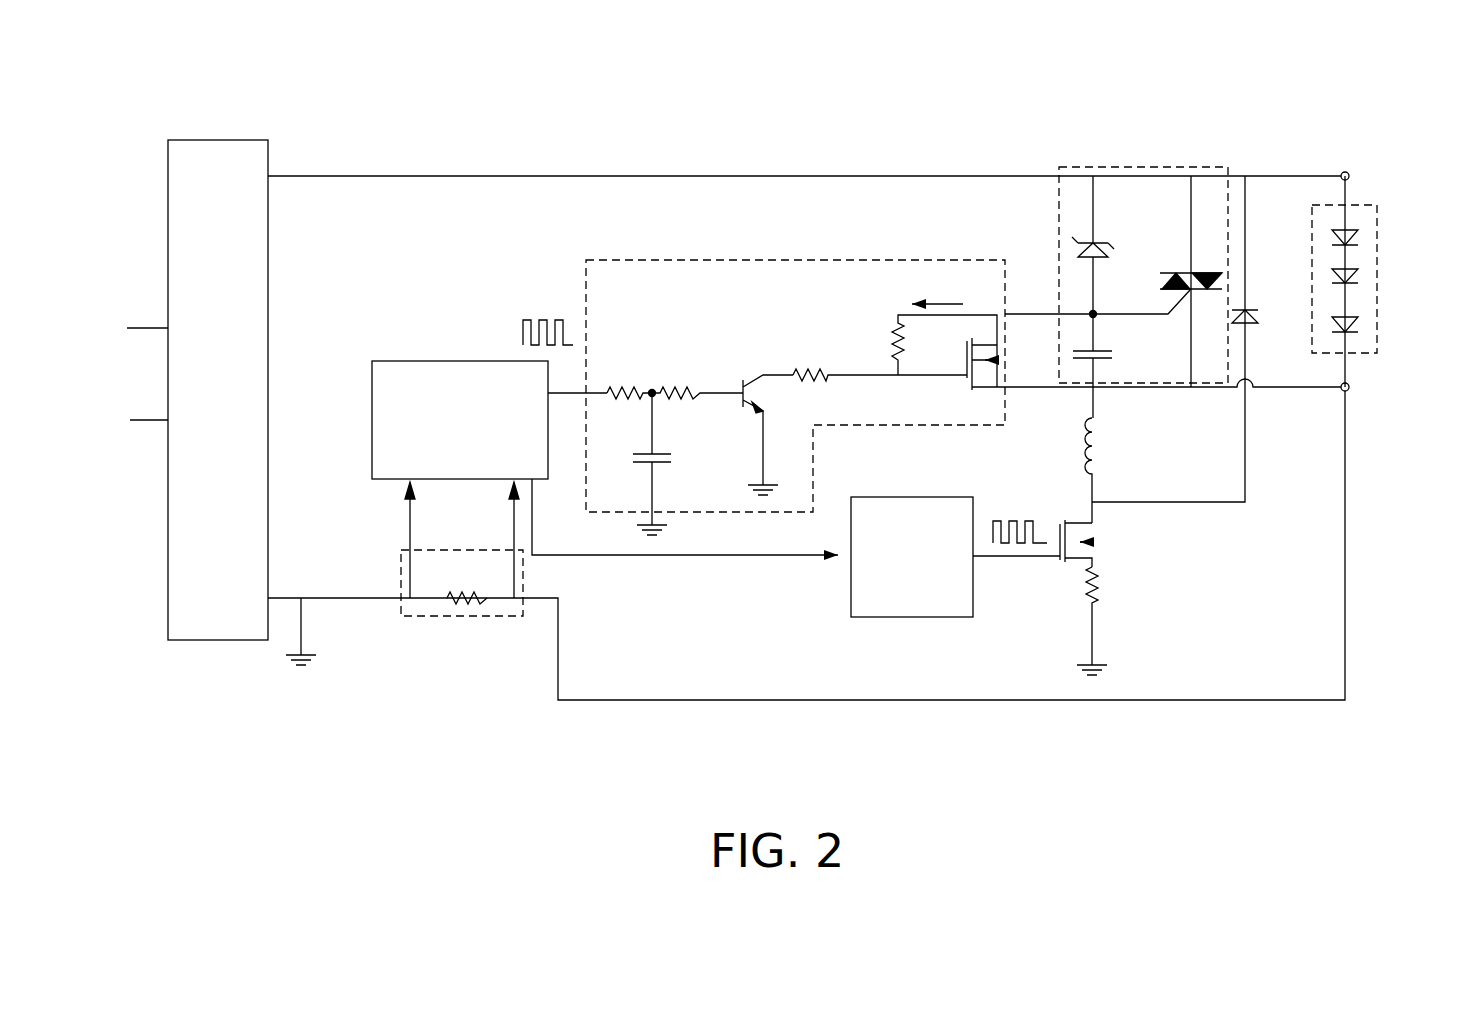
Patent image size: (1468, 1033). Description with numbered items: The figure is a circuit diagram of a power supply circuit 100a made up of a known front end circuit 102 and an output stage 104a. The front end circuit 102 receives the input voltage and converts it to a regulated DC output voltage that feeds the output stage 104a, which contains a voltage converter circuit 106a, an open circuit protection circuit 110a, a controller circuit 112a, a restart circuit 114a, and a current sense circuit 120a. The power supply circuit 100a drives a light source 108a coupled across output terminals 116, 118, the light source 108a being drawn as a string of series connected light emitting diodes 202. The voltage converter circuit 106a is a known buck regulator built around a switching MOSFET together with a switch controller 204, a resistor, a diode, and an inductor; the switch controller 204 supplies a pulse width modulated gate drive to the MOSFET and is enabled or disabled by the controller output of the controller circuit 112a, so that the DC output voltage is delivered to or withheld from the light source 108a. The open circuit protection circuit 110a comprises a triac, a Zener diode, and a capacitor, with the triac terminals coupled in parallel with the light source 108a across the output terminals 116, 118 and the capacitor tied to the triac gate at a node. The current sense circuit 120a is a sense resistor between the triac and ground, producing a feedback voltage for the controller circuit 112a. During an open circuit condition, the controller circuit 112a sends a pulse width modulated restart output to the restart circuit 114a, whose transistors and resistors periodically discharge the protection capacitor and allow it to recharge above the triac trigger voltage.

The power supply circuit 100a is at (496, 82).
The front end circuit 102 is at (218, 390).
The output stage 104a is at (786, 145).
The voltage converter circuit 106a is at (1178, 571).
The light source 108a is at (1377, 267).
The open circuit protection circuit 110a is at (1122, 167).
The controller circuit 112a is at (605, 438).
The restart circuit 114a is at (754, 260).
The output terminal 116 is at (1349, 174).
The output terminal 118 is at (1349, 388).
The current sense circuit 120a is at (473, 616).
The light emitting diode 202 is at (1377, 228).
The switch controller 204 is at (912, 557).